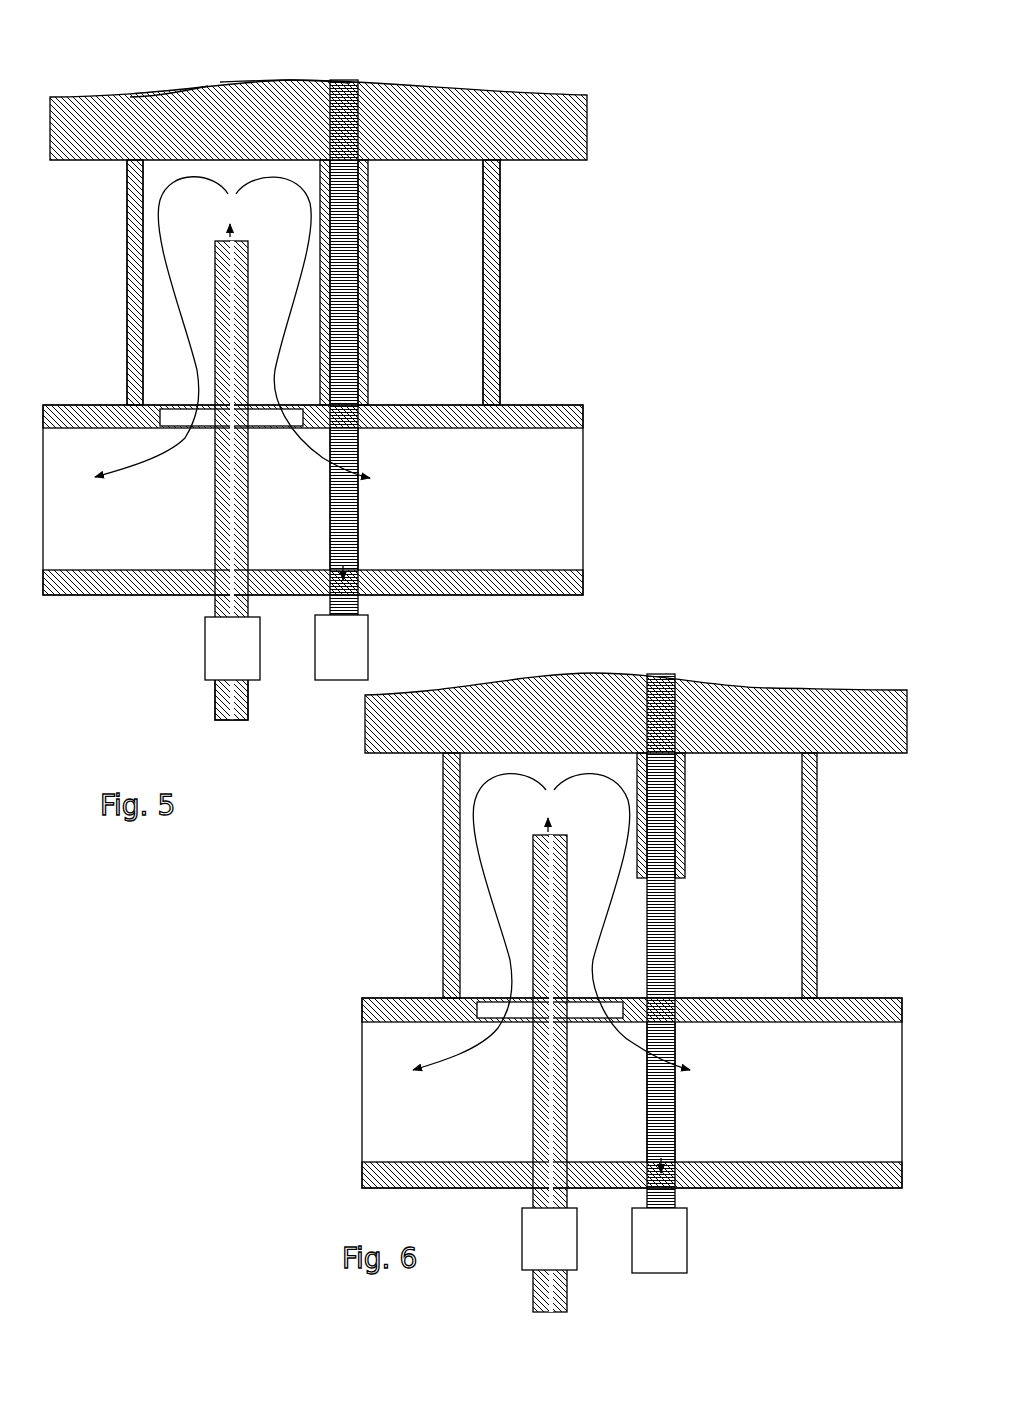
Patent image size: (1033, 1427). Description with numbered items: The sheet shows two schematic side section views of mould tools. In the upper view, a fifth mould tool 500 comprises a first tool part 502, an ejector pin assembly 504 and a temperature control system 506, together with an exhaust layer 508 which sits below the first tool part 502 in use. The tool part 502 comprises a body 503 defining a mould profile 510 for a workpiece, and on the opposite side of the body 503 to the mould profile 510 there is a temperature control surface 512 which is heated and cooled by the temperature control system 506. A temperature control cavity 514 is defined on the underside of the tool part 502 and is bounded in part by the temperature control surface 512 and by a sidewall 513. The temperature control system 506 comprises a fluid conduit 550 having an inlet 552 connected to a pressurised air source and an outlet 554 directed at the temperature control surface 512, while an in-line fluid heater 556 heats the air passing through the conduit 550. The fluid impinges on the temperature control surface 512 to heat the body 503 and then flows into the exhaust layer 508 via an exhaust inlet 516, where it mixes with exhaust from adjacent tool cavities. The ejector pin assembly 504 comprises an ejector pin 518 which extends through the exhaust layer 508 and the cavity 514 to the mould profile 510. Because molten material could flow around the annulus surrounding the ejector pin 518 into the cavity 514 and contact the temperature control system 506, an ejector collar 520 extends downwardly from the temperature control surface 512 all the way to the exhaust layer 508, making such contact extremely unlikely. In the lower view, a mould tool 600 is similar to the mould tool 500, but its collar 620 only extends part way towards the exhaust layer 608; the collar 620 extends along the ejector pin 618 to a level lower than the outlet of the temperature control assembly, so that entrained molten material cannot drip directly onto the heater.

In FIG. 5, the fifth mould tool 500 is at (743, 217).
In FIG. 5, the first tool part 502 is at (607, 113).
In FIG. 5, the body 503 is at (278, 78).
In FIG. 5, the ejector pin assembly 504 is at (385, 627).
In FIG. 5, the temperature control system 506 is at (182, 650).
In FIG. 5, the exhaust layer 508 is at (635, 483).
In FIG. 5, the mould profile 510 is at (208, 85).
In FIG. 5, the temperature control surface 512 is at (152, 172).
In FIG. 5, the sidewall 513 is at (128, 290).
In FIG. 5, the temperature control cavity 514 is at (163, 327).
In FIG. 5, the exhaust inlet 516 is at (202, 427).
In FIG. 5, the ejector pin 518 is at (347, 527).
In FIG. 5, the ejector collar 520 is at (365, 318).
In FIG. 5, the fluid conduit 550 is at (212, 500).
In FIG. 5, the inlet 552 is at (231, 721).
In FIG. 5, the outlet 554 is at (248, 242).
In FIG. 5, the in-line fluid heater 556 is at (232, 648).
In FIG. 6, the mould tool 600 is at (790, 668).
In FIG. 6, the exhaust layer 608 is at (305, 1108).
In FIG. 6, the ejector pin 618 is at (667, 1108).
In FIG. 6, the collar 620 is at (688, 815).